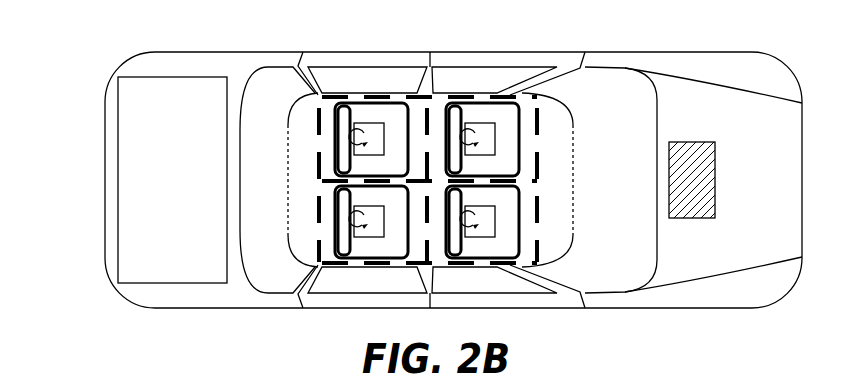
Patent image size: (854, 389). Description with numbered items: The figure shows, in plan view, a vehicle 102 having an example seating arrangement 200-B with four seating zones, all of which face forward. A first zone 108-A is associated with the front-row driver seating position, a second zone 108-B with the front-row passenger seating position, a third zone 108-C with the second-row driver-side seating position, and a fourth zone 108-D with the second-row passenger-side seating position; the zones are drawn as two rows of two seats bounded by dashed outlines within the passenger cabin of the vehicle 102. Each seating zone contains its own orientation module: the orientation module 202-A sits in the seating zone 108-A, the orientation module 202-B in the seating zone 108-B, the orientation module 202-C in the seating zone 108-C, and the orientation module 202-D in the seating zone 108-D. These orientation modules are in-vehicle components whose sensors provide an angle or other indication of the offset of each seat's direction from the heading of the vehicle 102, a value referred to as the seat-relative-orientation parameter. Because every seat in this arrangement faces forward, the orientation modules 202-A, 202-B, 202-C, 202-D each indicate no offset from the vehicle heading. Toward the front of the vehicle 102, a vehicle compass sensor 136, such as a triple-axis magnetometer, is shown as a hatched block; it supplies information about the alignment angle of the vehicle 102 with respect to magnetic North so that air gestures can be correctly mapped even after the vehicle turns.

The seating arrangement 200-B is at (147, 35).
The vehicle 102 is at (105, 100).
The first zone 108-A is at (508, 92).
The second zone 108-B is at (525, 270).
The third zone 108-C is at (348, 92).
The fourth zone 108-D is at (333, 270).
The orientation module 202-A is at (495, 146).
The orientation module 202-B is at (495, 226).
The orientation module 202-C is at (345, 143).
The orientation module 202-D is at (345, 229).
The vehicle compass sensor 136 is at (717, 172).